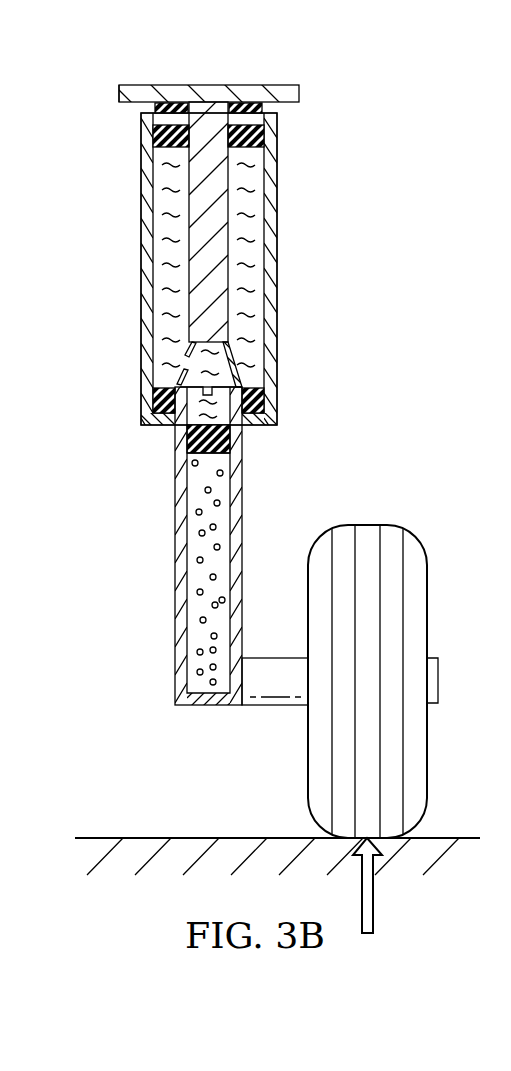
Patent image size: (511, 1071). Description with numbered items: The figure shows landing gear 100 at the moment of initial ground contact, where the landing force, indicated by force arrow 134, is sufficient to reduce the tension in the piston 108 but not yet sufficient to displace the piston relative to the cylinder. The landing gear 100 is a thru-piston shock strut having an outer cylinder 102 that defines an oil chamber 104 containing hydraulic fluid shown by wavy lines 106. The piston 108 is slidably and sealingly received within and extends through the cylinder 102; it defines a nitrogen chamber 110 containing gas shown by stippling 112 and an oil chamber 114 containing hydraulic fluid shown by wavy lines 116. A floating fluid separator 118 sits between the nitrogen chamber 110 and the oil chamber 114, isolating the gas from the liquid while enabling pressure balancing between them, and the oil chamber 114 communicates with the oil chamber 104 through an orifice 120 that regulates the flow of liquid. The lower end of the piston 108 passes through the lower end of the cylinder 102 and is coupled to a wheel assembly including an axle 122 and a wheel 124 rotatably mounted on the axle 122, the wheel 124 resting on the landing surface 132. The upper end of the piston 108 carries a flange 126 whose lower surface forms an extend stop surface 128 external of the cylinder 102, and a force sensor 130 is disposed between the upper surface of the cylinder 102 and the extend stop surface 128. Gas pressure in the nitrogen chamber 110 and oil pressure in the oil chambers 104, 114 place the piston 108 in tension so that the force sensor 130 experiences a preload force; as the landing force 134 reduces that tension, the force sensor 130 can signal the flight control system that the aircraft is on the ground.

The landing gear 100 is at (388, 142).
The outer cylinder 102 is at (270, 185).
The oil chamber 104 is at (253, 225).
The wavy lines 106 is at (248, 262).
The piston 108 is at (200, 284).
The nitrogen chamber 110 is at (193, 553).
The stippling 112 is at (202, 606).
The oil chamber 114 is at (222, 410).
The wavy lines 116 is at (213, 340).
The fluid separator 118 is at (212, 456).
The orifice 120 is at (198, 388).
The axle 122 is at (275, 705).
The wheel 124 is at (428, 740).
The flange 126 is at (253, 85).
The extend stop surface 128 is at (120, 102).
The force sensor 130 is at (262, 107).
The landing surface 132 is at (192, 838).
The force arrow 134 is at (373, 893).